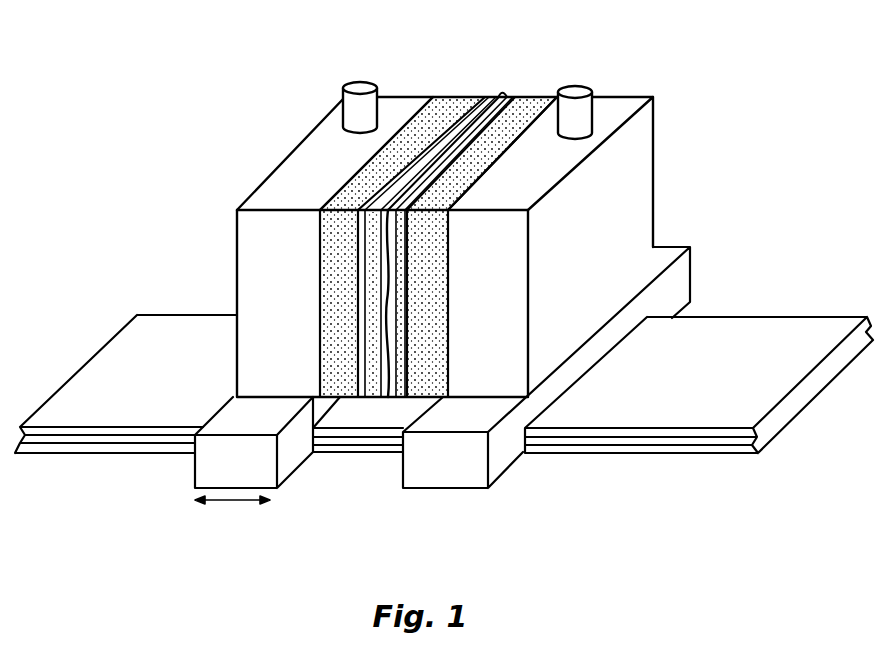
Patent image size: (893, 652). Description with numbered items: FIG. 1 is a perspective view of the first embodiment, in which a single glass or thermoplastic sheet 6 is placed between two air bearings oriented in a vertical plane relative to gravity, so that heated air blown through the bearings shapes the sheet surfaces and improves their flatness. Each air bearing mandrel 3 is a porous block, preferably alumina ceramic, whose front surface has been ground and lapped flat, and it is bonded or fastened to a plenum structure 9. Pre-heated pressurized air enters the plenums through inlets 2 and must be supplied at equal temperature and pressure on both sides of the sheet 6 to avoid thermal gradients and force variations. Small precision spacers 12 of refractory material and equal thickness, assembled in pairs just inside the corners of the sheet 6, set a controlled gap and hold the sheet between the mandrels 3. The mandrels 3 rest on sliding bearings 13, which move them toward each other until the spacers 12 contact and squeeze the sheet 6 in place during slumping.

The inlet 2 is at (370, 77).
The air bearing mandrel 3 is at (447, 118).
The glass or thermoplastic sheet 6 is at (492, 117).
The plenum structure 9 is at (313, 172).
The precision spacer 12 is at (388, 396).
The sliding bearing 13 is at (217, 468).